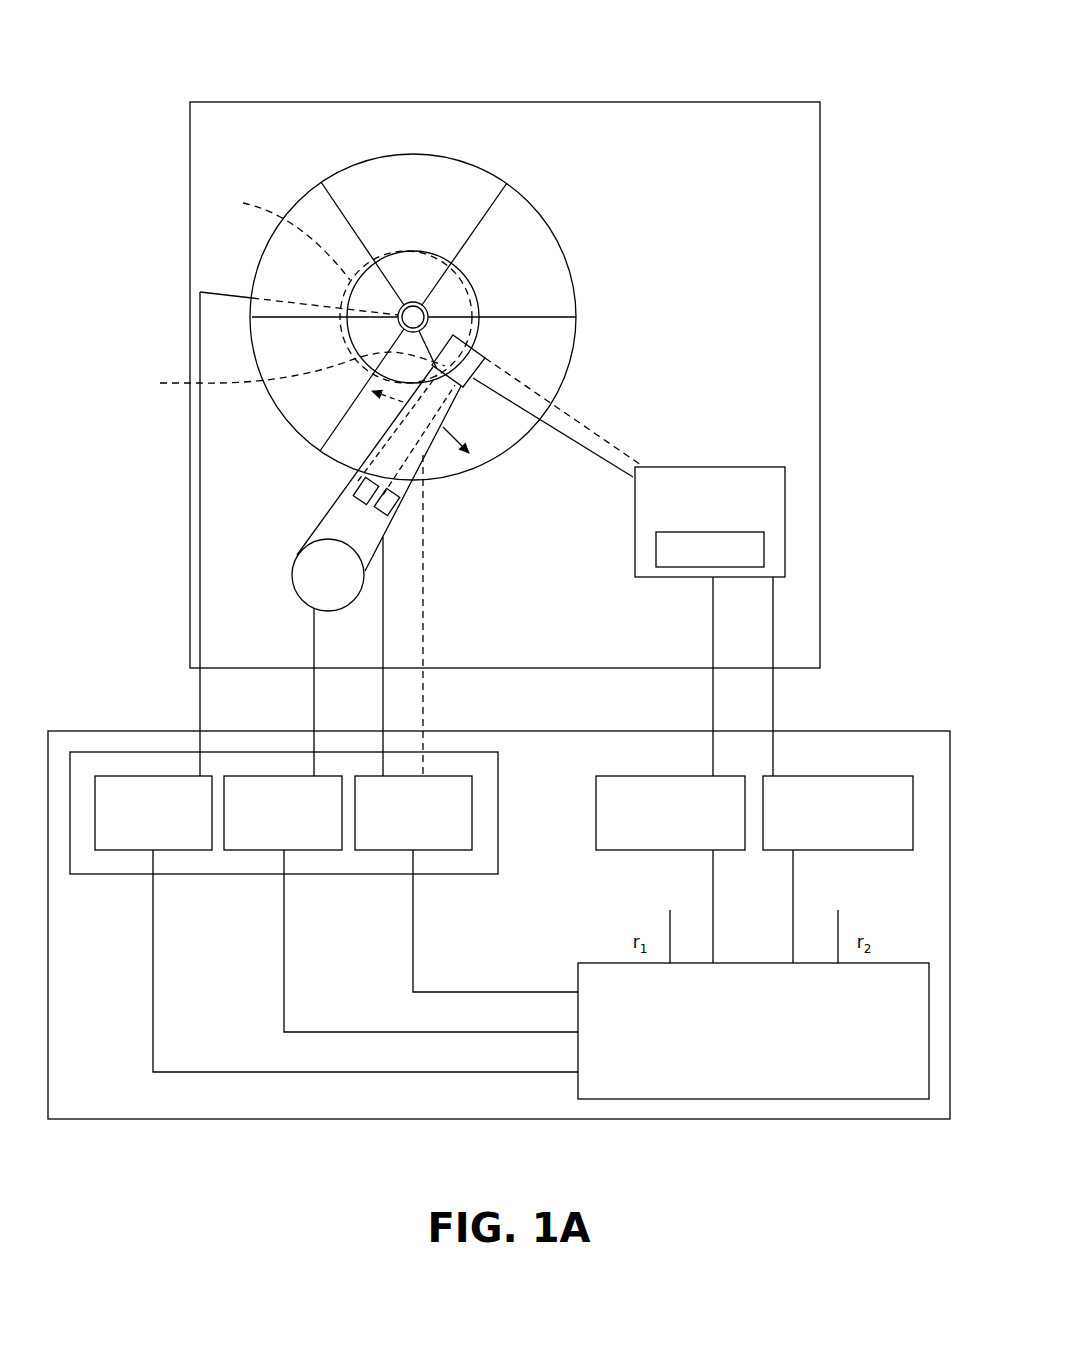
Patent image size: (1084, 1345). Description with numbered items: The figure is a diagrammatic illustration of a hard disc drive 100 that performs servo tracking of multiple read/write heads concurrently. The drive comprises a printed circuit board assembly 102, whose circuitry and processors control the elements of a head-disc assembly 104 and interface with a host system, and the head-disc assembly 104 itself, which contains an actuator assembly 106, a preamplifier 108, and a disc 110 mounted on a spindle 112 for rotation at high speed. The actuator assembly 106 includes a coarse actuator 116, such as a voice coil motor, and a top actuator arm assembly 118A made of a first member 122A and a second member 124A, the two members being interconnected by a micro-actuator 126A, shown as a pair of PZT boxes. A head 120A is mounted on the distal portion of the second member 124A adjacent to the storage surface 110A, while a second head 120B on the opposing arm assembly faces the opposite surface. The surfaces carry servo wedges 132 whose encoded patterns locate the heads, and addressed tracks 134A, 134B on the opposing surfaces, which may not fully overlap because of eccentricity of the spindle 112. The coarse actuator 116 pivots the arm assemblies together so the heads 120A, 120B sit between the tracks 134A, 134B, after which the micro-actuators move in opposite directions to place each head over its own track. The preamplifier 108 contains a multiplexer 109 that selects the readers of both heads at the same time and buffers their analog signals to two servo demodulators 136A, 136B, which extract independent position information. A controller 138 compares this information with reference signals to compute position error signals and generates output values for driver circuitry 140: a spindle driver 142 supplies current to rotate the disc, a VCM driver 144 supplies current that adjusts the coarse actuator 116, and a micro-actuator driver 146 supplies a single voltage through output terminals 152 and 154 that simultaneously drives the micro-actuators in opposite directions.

The hard disc drive 100 is at (855, 63).
The printed circuit board assembly 102 is at (145, 1120).
The head-disc assembly 104 is at (238, 101).
The actuator assembly 106 is at (300, 514).
The preamplifier 108 is at (786, 490).
The multiplexer 109 is at (765, 548).
The disc 110 is at (530, 198).
The storage surface 110A is at (560, 293).
The spindle 112 is at (410, 303).
The coarse actuator 116 is at (323, 582).
The top actuator arm assembly 118A is at (330, 497).
The transducer or head 120A is at (479, 383).
The transducer or head 120B is at (277, 373).
The first member 122A is at (325, 520).
The second member 124A is at (398, 487).
The micro-actuator 126A is at (365, 503).
The servo wedges 132 is at (339, 206).
The track 134A is at (472, 280).
The track 134B is at (270, 235).
The servo demodulator 136A is at (608, 852).
The servo demodulator 136B is at (880, 852).
The controller 138 is at (858, 1100).
The driver circuitry 140 is at (84, 875).
The spindle driver 142 is at (322, 852).
The VCM driver 144 is at (452, 852).
The micro-actuator driver 146 is at (187, 852).
The output terminal 152 is at (384, 721).
The output terminal 154 is at (423, 678).